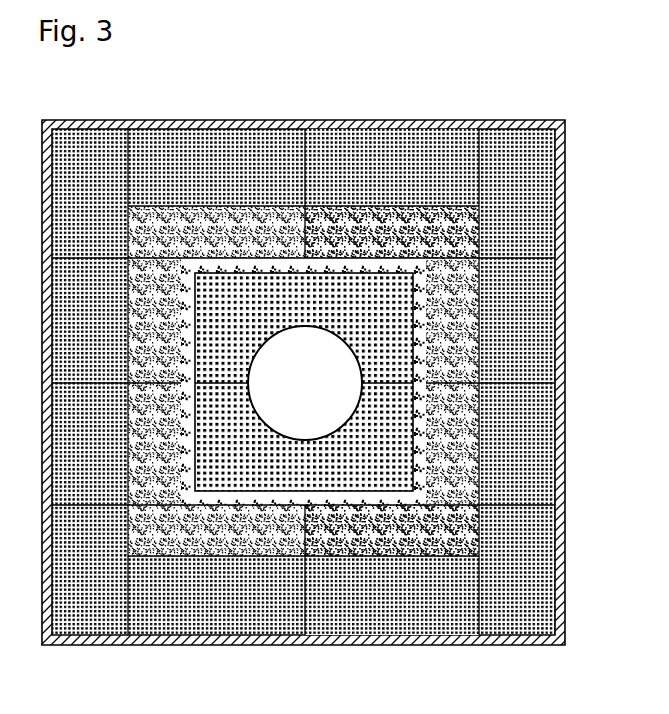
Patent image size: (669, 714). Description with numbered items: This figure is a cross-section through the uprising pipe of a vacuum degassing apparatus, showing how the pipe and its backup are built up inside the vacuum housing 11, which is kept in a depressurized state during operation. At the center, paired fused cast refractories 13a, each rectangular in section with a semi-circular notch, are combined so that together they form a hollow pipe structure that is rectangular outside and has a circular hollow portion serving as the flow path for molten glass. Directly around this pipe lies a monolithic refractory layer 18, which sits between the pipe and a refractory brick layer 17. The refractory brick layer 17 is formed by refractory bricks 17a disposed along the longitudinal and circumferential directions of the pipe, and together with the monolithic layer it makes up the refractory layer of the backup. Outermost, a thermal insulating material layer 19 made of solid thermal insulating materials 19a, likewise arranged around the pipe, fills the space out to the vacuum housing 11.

The vacuum housing 11 is at (557, 552).
The fused cast refractories 13a is at (338, 295).
The refractory brick layer 17 is at (447, 228).
The refractory bricks 17a is at (388, 232).
The monolithic refractory layer 18 is at (418, 287).
The thermal insulating material layer 19 is at (513, 175).
The solid thermal insulating materials 19a is at (440, 160).